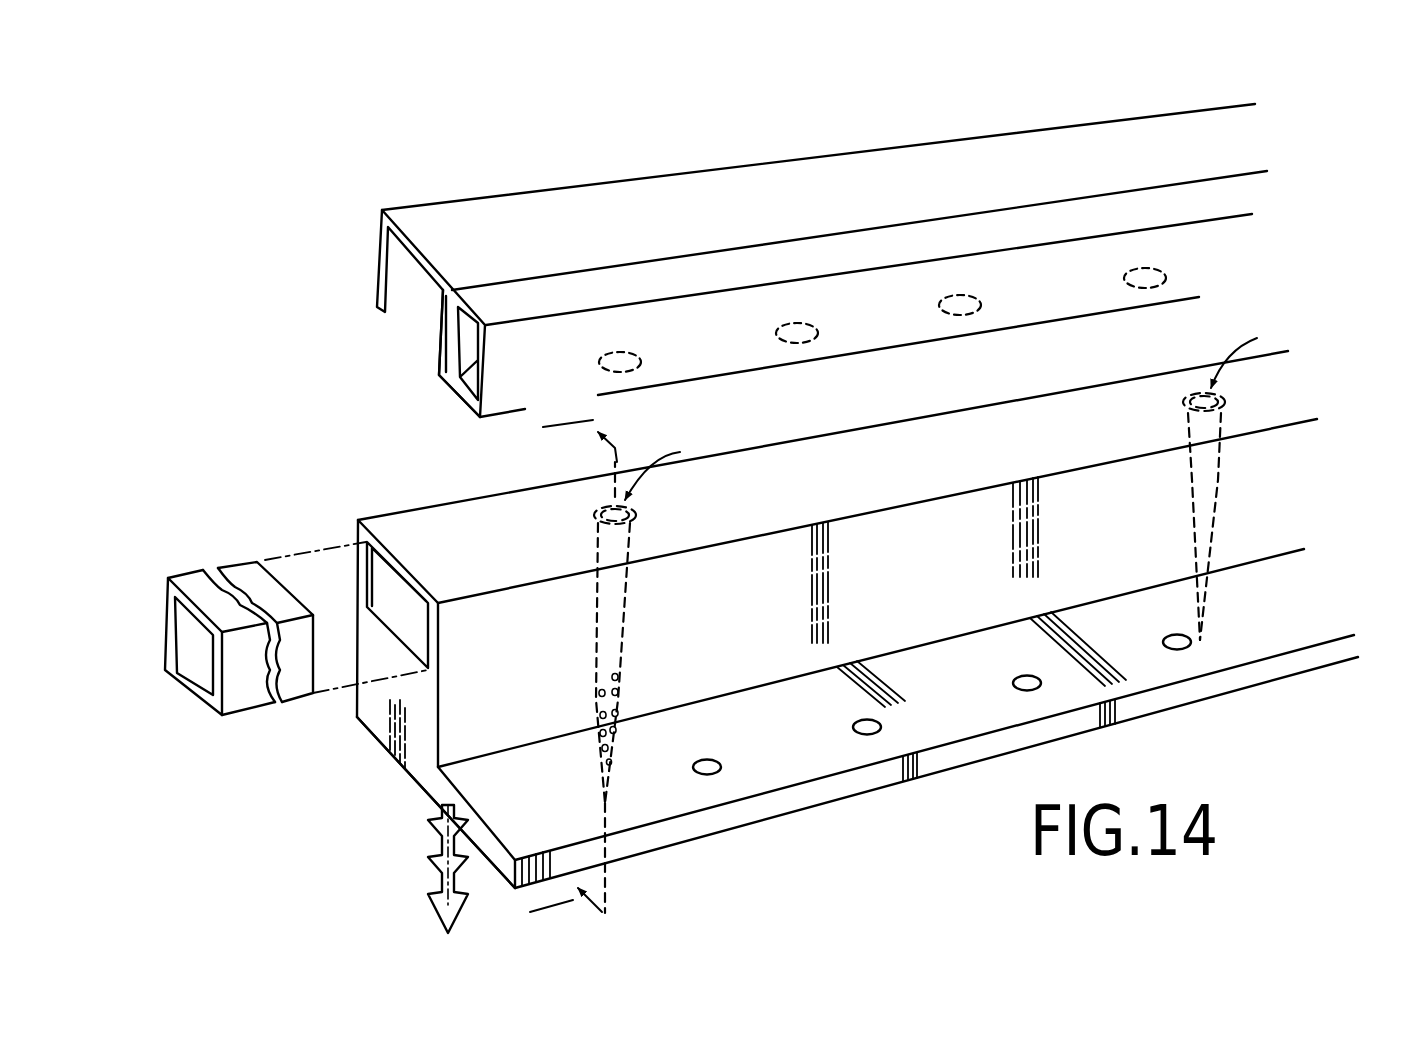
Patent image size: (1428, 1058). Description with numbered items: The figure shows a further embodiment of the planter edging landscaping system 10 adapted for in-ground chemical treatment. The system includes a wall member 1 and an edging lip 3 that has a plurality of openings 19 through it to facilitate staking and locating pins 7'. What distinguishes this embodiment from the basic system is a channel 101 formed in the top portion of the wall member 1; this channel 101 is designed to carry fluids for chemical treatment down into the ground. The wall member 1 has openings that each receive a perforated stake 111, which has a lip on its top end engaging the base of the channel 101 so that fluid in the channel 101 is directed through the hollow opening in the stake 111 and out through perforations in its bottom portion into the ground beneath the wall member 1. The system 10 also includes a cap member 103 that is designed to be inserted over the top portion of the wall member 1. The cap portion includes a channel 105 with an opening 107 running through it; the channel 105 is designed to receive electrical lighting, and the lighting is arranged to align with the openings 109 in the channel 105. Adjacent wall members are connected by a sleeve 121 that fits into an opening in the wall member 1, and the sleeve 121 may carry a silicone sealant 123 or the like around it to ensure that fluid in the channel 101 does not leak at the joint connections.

The planter edging landscaping system 10 is at (373, 148).
The channel 101 is at (841, 613).
The cap member 103 is at (817, 322).
The channel 105 is at (1027, 217).
The opening 107 is at (442, 540).
The openings 109 is at (796, 344).
The perforated stake 111 is at (622, 660).
The edging lip 3 is at (1207, 503).
The openings 19 is at (853, 727).
The sleeve 121 is at (296, 631).
The silicone sealant 123 is at (275, 707).
The wall member 1 is at (385, 720).
The pins 7' is at (423, 869).